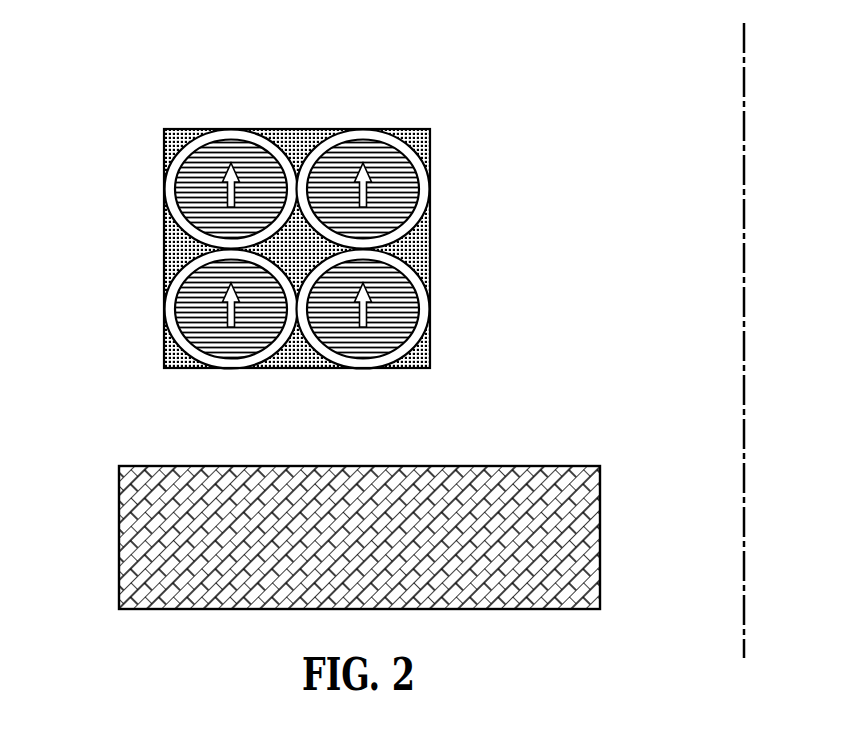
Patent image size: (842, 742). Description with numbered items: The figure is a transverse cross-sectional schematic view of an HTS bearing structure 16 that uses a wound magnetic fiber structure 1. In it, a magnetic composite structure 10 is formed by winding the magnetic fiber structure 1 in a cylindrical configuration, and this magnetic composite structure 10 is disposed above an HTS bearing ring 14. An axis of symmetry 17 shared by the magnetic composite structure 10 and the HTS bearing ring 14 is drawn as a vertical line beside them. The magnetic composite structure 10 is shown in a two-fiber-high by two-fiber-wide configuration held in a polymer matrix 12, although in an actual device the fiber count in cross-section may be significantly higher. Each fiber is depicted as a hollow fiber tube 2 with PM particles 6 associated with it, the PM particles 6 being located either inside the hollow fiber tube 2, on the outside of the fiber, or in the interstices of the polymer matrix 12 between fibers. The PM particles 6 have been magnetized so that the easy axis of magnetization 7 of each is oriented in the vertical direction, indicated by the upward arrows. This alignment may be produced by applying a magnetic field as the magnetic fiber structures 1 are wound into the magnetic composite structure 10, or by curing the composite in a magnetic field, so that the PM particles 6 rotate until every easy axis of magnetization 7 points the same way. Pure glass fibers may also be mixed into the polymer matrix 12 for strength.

The magnetic fiber structure 1 is at (277, 129).
The hollow fiber tube 2 is at (178, 213).
The PM particles 6 is at (209, 157).
The easy axis of magnetization 7 is at (231, 192).
The magnetic composite structure 10 is at (416, 116).
The polymer matrix 12 is at (430, 137).
The HTS bearing ring 14 is at (570, 542).
The HTS bearing structure 16 is at (118, 82).
The axis of symmetry 17 is at (745, 177).